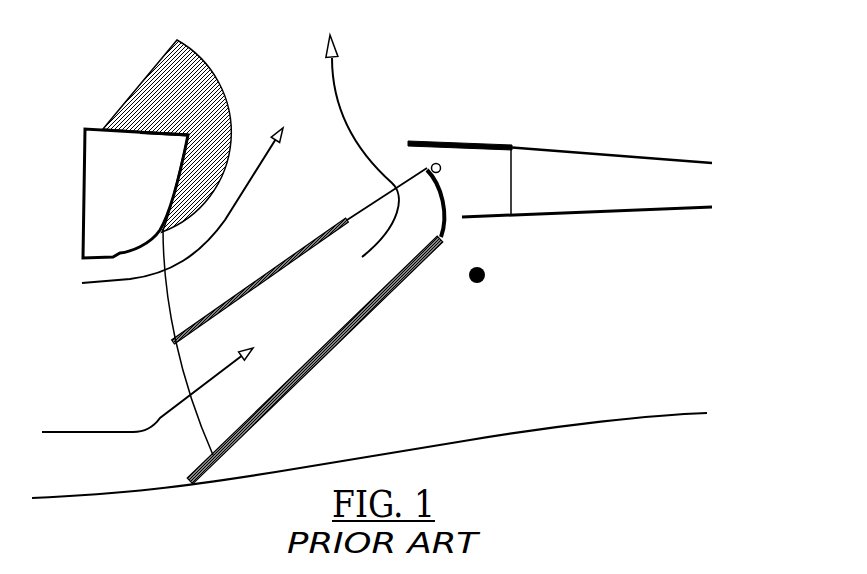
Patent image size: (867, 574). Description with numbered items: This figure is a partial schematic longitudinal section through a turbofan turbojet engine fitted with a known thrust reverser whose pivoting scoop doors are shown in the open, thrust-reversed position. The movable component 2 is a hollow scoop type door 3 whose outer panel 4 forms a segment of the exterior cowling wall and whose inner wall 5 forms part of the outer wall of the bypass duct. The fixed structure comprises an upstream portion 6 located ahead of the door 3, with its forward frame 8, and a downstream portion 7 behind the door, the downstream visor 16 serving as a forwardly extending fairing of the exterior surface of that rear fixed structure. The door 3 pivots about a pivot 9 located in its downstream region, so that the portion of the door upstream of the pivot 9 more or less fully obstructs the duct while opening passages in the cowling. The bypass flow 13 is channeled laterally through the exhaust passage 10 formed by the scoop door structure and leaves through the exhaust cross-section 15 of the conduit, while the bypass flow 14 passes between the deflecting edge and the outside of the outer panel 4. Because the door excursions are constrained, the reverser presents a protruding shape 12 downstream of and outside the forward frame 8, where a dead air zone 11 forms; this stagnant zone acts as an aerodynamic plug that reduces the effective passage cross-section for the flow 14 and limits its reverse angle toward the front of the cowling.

The movable component 2 is at (324, 190).
The scoop type door 3 is at (324, 266).
The outer panel 4 is at (267, 273).
The inner wall 5 is at (310, 363).
The upstream portion 6 is at (88, 97).
The downstream portion 7 is at (560, 150).
The forward frame 8 is at (103, 197).
The pivot 9 is at (478, 287).
The exhaust passage 10 is at (313, 280).
The dead air zone 11 is at (189, 81).
The protruding shape 12 is at (176, 143).
The bypass flow 13 is at (147, 410).
The bypass flow 14 is at (182, 222).
The exhaust cross-section 15 is at (397, 170).
The downstream visor 16 is at (462, 133).